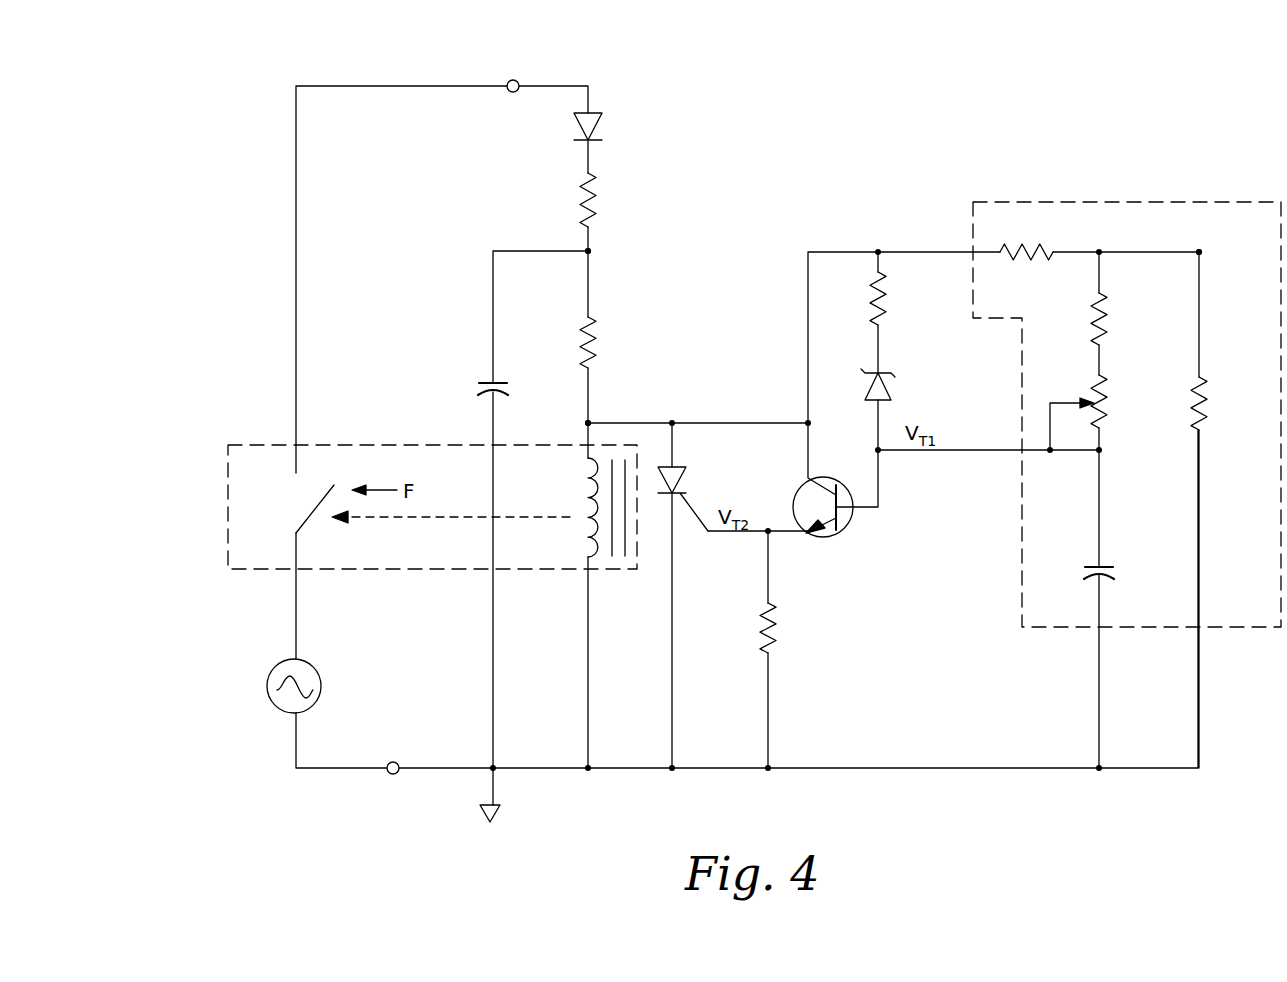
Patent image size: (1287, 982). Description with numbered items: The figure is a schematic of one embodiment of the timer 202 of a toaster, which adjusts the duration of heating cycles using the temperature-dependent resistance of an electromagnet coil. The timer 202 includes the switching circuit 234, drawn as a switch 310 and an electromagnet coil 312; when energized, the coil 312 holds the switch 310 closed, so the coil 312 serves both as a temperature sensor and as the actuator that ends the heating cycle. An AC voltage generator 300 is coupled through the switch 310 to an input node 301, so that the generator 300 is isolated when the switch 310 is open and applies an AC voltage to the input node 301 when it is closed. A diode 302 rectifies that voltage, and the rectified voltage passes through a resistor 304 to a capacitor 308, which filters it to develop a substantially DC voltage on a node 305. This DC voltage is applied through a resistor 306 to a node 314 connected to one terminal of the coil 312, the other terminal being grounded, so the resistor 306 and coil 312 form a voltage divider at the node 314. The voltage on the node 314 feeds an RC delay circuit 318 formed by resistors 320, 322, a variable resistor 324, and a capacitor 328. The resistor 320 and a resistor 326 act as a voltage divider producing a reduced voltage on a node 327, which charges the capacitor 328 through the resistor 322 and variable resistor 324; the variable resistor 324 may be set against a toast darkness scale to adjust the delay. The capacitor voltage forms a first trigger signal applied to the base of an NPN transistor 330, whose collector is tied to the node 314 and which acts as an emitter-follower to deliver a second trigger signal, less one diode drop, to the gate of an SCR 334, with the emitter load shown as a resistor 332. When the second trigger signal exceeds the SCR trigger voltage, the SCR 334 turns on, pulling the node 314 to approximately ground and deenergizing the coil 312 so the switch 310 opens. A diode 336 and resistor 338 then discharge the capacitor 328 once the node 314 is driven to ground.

The timer 202 is at (889, 111).
The switching circuit 234 is at (238, 443).
The AC voltage generator 300 is at (266, 686).
The input node 301 is at (518, 80).
The diode 302 is at (601, 128).
The resistor 304 is at (598, 204).
The node 305 is at (584, 249).
The resistor 306 is at (598, 334).
The capacitor 308 is at (477, 385).
The switch 310 is at (320, 494).
The electromagnet coil 312 is at (582, 548).
The node 314 is at (592, 421).
The RC delay circuit 318 is at (1222, 200).
The resistor 320 is at (1048, 250).
The resistor 322 is at (1110, 313).
The variable resistor 324 is at (1110, 398).
The resistor 326 is at (1210, 404).
The node 327 is at (1205, 251).
The capacitor 328 is at (1106, 569).
The NPN transistor 330 is at (845, 532).
The resistor 332 is at (760, 631).
The SCR 334 is at (688, 478).
The diode 336 is at (884, 372).
The resistor 338 is at (892, 296).